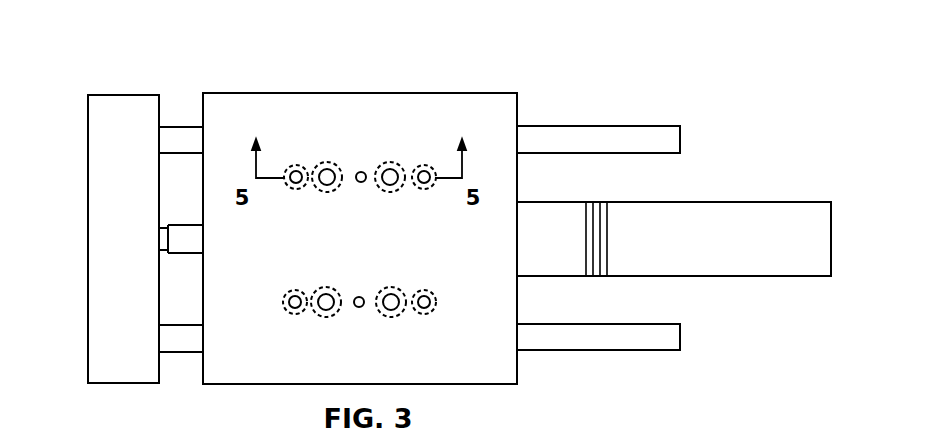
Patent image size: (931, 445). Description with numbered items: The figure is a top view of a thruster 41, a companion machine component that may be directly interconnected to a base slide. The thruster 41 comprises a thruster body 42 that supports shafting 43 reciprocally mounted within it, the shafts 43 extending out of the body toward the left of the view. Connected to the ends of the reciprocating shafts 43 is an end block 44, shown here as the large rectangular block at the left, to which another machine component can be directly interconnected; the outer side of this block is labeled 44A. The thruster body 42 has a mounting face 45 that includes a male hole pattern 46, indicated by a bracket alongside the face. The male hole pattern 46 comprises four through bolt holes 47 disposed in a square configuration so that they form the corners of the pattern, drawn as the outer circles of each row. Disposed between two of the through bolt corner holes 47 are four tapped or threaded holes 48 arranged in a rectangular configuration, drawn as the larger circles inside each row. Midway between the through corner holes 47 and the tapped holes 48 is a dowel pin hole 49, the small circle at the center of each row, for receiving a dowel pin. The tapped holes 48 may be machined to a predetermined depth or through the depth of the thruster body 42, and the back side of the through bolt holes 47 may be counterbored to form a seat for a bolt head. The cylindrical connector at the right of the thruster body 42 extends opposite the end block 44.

The thruster 41 is at (497, 77).
The thruster body 42 is at (250, 384).
The shafting 43 is at (182, 130).
The end block 44 is at (103, 237).
The block face 44A is at (88, 300).
The mounting face 45 is at (220, 110).
The male hole pattern 46 is at (484, 149).
The through bolt holes 47 is at (296, 169).
The tapped holes 48 is at (327, 168).
The dowel pin hole 49 is at (362, 172).